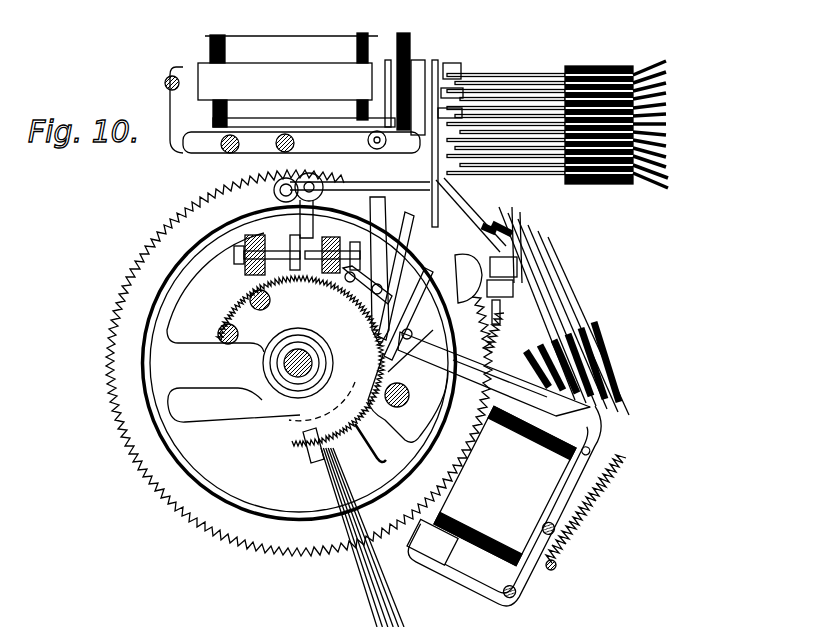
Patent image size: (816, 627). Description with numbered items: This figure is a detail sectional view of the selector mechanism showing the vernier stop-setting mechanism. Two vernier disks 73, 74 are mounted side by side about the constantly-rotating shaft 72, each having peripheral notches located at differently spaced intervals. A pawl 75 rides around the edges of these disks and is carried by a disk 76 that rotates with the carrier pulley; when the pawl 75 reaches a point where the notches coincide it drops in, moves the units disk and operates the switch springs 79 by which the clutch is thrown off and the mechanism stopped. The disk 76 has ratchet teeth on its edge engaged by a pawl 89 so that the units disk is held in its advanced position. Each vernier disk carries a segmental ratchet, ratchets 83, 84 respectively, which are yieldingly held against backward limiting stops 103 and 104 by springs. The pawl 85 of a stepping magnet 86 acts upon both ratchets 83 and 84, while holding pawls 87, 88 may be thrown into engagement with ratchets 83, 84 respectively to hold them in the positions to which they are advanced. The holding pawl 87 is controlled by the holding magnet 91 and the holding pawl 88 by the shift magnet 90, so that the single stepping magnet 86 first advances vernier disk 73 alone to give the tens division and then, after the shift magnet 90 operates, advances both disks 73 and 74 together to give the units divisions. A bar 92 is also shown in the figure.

The constantly-rotating shaft 72 is at (285, 377).
The vernier disk 73 is at (180, 272).
The vernier disk 74 is at (299, 355).
The pawl 75 is at (333, 187).
The disk 76 is at (299, 363).
The switch springs 79 is at (515, 172).
The segmental ratchet 83 is at (300, 361).
The segmental ratchet 84 is at (246, 312).
The pawl of the stepping magnet 85 is at (390, 374).
The stepping magnet 86 is at (514, 485).
The holding pawl 87 is at (412, 286).
The holding pawl 88 is at (382, 222).
The pawl 89 is at (510, 310).
The shift magnet 90 is at (266, 46).
The holding magnet 91 is at (380, 40).
The bar 92 is at (438, 200).
The backward limiting stop 103 is at (250, 300).
The backward limiting stop 104 is at (217, 328).